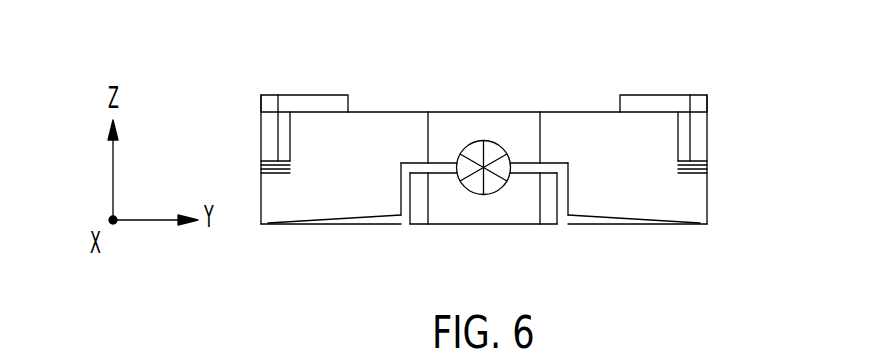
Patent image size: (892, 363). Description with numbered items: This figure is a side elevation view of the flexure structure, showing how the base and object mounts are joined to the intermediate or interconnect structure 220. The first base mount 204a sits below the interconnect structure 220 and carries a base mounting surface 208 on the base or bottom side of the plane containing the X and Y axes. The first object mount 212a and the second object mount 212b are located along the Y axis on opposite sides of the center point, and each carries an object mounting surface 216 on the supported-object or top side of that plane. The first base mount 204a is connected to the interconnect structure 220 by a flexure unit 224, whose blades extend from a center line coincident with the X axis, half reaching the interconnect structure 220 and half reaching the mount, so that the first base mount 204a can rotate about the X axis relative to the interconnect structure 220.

The first base mount 204a is at (486, 213).
The base mounting surface 208 is at (437, 224).
The first object mount 212a is at (262, 127).
The second object mount 212b is at (707, 130).
The object mounting surface 216 is at (307, 95).
The interconnect structure 220 is at (590, 111).
The flexure unit 224 is at (484, 146).